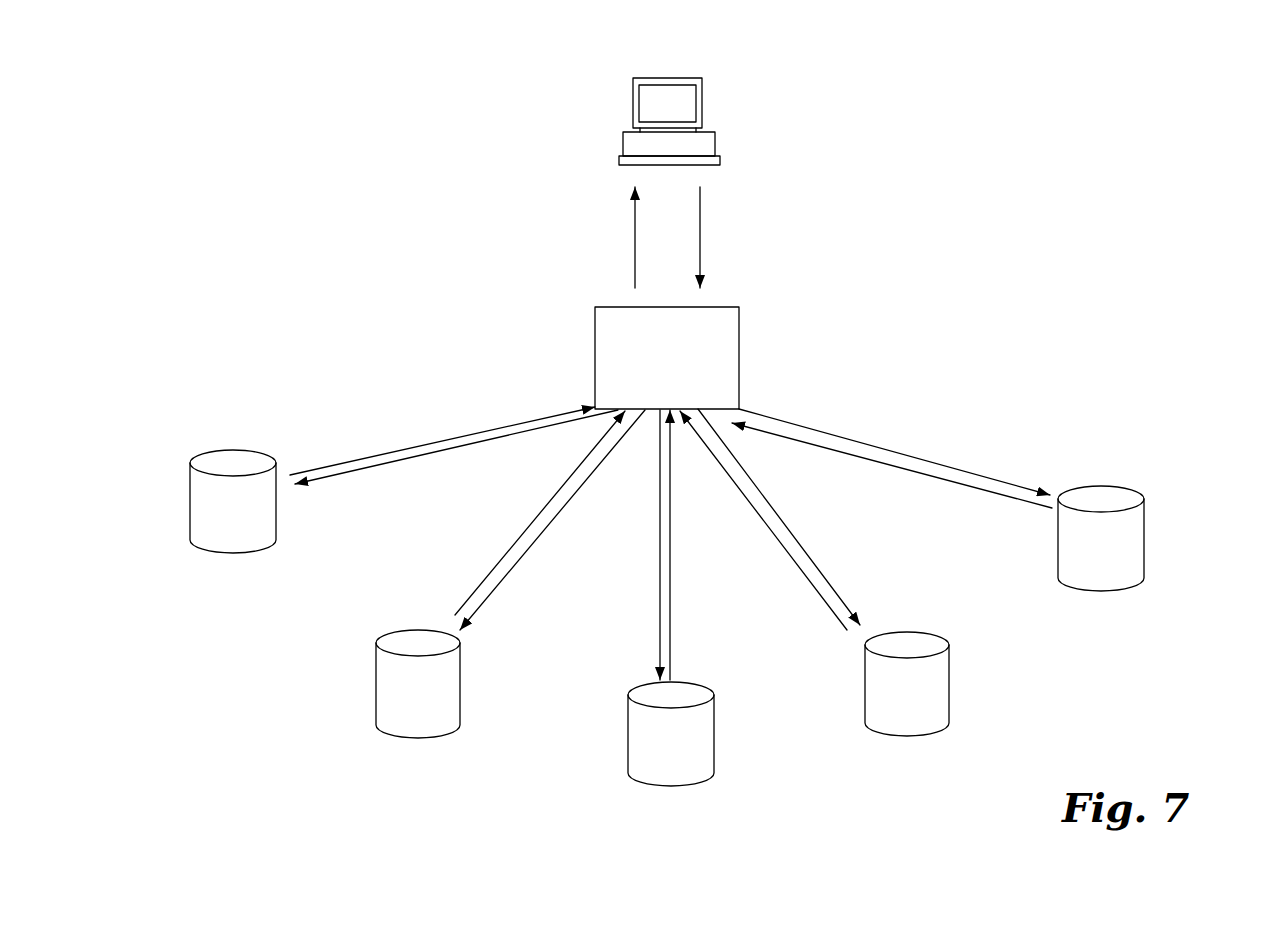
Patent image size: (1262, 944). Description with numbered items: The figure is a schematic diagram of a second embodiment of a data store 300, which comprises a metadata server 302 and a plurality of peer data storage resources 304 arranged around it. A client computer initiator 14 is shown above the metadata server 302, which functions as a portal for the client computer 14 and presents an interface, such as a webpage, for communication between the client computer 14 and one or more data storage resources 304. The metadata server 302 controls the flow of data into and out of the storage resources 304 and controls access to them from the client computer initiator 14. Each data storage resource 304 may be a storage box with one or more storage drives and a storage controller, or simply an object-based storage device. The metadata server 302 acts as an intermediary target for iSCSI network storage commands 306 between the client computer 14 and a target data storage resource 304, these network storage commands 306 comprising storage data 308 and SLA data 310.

The client computer initiator 14 is at (696, 91).
The data store 300 is at (970, 328).
The metadata server 302 is at (733, 323).
The peer data storage resource 304 is at (217, 460).
The iSCSI network storage command 306 is at (671, 399).
The storage data 308 is at (671, 399).
The SLA data 310 is at (700, 225).